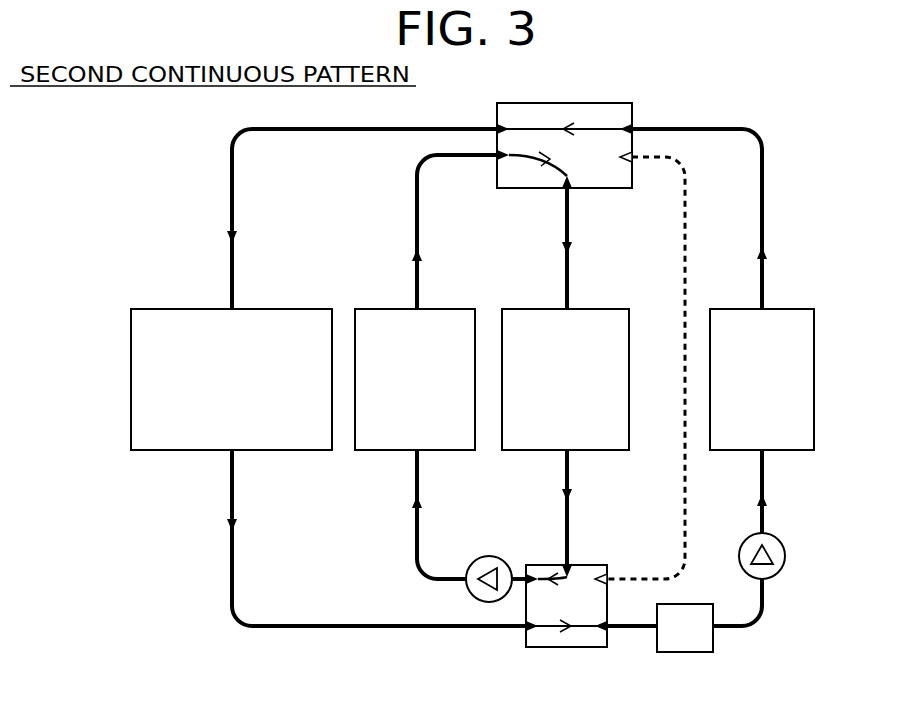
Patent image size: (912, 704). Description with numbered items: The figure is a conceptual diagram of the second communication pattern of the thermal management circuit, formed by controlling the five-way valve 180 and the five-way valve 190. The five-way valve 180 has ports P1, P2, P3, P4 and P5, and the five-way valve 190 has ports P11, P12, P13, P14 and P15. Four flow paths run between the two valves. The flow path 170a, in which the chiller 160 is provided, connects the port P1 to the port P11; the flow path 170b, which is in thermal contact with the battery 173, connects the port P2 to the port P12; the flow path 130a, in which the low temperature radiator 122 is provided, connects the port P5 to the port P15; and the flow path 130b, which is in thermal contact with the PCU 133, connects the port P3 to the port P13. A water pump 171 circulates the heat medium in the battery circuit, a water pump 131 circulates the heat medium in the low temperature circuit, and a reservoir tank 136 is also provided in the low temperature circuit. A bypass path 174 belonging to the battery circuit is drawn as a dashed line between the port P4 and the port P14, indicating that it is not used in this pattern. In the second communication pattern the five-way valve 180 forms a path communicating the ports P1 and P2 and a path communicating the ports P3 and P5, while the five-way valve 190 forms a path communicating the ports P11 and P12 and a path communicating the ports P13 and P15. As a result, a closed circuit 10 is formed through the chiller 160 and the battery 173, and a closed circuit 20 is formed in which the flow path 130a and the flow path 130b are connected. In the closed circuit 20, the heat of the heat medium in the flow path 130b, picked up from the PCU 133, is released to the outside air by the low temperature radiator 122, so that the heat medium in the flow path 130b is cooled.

The closed circuit 20 is at (768, 130).
The closed circuit 10 is at (414, 162).
The flow path 130a is at (234, 207).
The flow path 130b is at (764, 216).
The flow path 170a is at (419, 226).
The flow path 170b is at (569, 265).
The bypass path 174 is at (687, 230).
The low temperature radiator 122 is at (256, 309).
The chiller 160 is at (430, 309).
The battery 173 is at (588, 309).
The Power Control Unit (PCU) 133 is at (784, 309).
The reservoir tank 136 is at (688, 604).
The five-way valve 180 is at (600, 105).
The five-way valve 190 is at (590, 565).
The water pump 171 is at (484, 557).
The water pump 131 is at (773, 540).
The port P1 is at (497, 168).
The port P2 is at (572, 190).
The port P3 is at (632, 122).
The port P4 is at (630, 162).
The port P5 is at (497, 121).
The port P11 is at (535, 572).
The port P12 is at (563, 563).
The port P13 is at (600, 636).
The port P14 is at (603, 570).
The port P15 is at (535, 636).